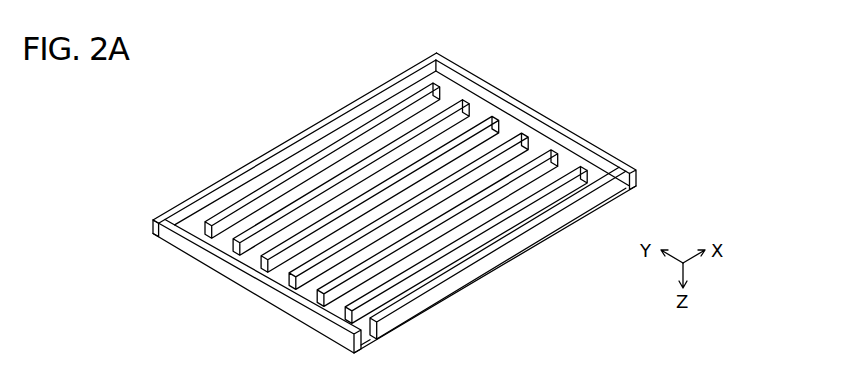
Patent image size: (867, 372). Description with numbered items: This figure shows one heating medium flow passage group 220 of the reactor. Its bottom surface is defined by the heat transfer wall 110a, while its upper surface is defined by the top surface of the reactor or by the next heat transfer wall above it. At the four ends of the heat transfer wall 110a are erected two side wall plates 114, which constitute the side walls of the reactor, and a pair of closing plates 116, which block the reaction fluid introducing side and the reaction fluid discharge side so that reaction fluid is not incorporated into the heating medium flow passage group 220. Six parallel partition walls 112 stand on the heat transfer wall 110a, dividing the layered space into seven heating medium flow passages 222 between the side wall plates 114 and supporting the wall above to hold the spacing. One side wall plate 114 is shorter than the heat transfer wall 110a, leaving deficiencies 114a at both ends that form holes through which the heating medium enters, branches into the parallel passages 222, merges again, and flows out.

The heating medium flow passage group 220 is at (226, 128).
The heat transfer wall 110a is at (455, 98).
The partition walls 112 is at (587, 170).
The side wall plates 114 is at (388, 90).
The deficiencies 114a is at (372, 343).
The closing plates 116 is at (173, 219).
The heating medium flow passages 222 is at (350, 315).